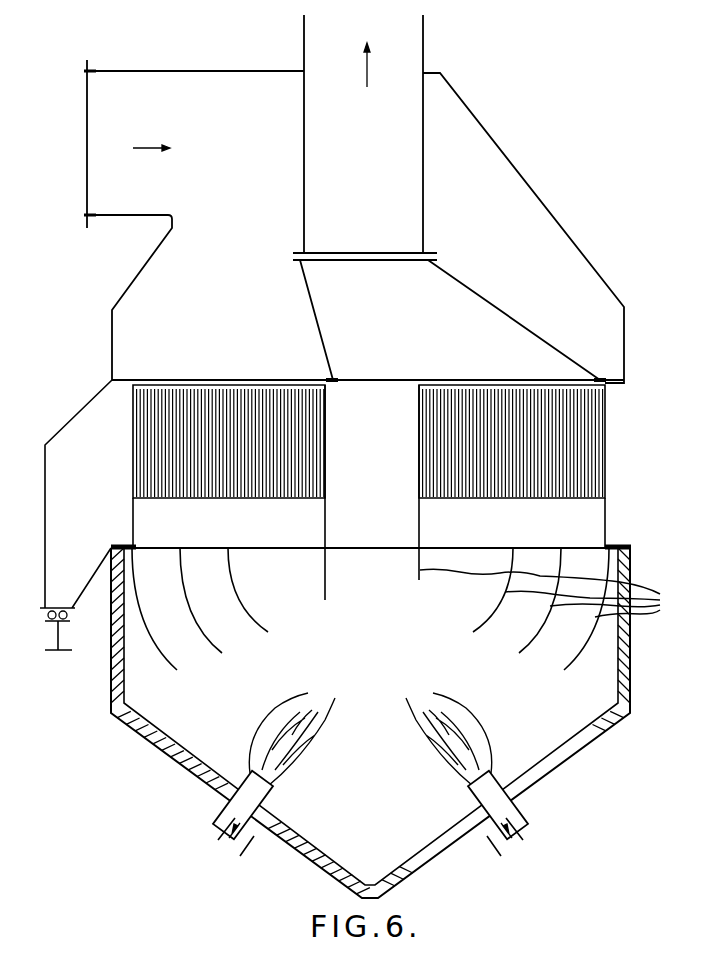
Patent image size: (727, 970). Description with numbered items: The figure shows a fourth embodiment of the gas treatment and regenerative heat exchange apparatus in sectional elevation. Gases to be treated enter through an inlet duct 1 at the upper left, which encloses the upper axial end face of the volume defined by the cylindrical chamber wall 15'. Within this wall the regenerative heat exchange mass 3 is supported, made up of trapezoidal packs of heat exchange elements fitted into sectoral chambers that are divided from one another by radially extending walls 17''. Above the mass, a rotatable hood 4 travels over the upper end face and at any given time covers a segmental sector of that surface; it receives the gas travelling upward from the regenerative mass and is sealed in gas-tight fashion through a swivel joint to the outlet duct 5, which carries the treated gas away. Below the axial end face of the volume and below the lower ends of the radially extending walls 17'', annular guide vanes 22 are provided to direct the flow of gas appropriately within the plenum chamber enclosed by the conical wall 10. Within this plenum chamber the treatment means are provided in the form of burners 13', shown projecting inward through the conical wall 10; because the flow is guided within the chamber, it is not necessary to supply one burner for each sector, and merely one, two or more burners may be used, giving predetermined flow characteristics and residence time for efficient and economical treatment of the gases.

The inlet duct 1 is at (243, 148).
The outlet duct 5 is at (377, 148).
The rotatable hood 4 is at (428, 350).
The regenerative heat exchange mass 3 is at (596, 438).
The cylindrical chamber wall 15' is at (367, 515).
The radially extending walls 17'' is at (369, 492).
The annular guide vanes 22 is at (414, 609).
The conical wall 10 is at (631, 652).
The burners 13' is at (371, 774).